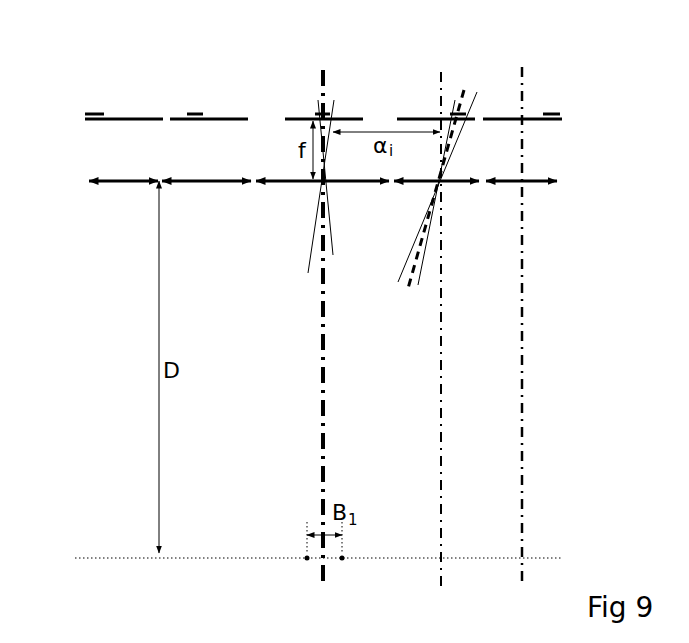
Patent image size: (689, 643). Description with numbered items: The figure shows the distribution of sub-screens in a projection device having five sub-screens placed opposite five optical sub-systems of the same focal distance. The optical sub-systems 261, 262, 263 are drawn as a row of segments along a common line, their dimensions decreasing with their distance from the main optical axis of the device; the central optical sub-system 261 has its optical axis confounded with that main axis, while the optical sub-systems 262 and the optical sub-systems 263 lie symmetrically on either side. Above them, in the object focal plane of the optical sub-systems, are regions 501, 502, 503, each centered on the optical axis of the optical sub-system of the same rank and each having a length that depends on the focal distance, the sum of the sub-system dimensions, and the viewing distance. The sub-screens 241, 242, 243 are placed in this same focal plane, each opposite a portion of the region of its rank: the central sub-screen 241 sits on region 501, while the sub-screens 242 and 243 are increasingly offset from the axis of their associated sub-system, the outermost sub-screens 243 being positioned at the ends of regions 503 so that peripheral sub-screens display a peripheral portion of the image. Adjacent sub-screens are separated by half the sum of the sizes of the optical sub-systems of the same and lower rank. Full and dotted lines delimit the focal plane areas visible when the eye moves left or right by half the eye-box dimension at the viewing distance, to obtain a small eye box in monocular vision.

The sub-screen of rank one 241 is at (330, 116).
The sub-screen of rank two 242 is at (478, 54).
The sub-screen of rank three 243 is at (580, 59).
The region of rank one 501 is at (353, 117).
The region of rank two 502 is at (232, 117).
The region of rank three 503 is at (134, 117).
The optical sub-system of rank one 261 is at (343, 184).
The optical sub-system of rank two 262 is at (487, 222).
The optical sub-system of rank three 263 is at (557, 220).